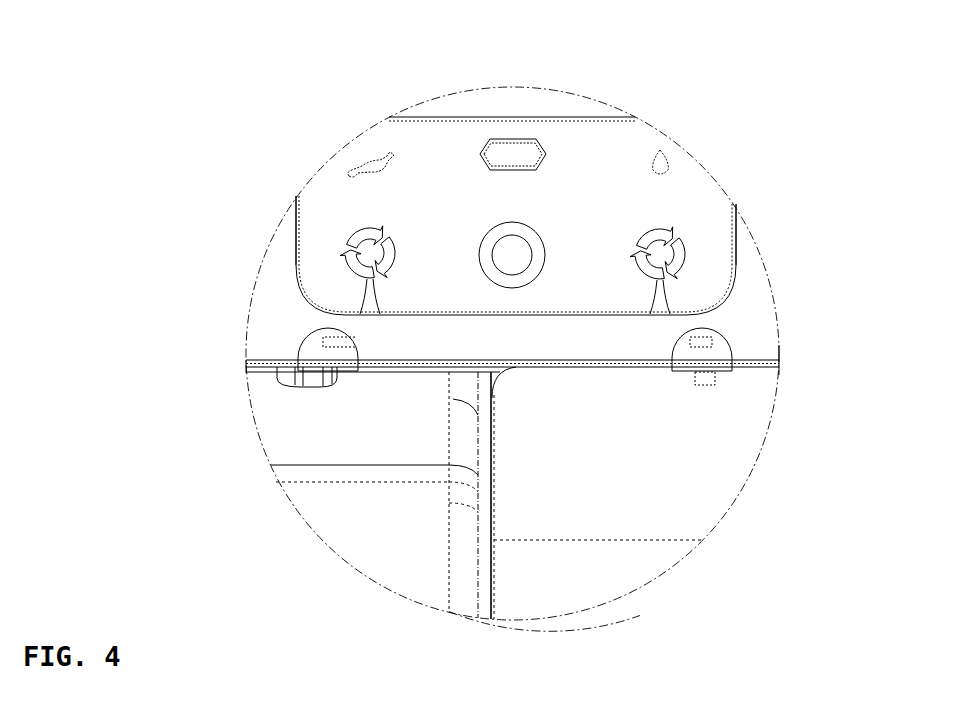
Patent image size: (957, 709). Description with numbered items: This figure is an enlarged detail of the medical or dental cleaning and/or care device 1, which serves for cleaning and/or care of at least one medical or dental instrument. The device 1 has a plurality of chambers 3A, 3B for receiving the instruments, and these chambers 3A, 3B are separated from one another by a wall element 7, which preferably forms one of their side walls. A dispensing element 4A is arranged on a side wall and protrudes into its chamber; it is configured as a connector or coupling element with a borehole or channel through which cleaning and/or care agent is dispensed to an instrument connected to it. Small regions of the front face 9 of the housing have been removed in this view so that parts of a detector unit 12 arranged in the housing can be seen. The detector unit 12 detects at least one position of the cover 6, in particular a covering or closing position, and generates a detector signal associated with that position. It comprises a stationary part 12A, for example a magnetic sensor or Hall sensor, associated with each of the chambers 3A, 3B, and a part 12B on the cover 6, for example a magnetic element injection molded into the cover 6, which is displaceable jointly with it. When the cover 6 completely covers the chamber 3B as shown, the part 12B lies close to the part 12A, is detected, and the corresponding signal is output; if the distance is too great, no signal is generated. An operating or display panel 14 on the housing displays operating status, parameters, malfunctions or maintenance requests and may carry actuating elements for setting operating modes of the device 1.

The medical or dental cleaning and/or care device 1 is at (724, 148).
The chamber 3A is at (365, 545).
The chamber 3B is at (566, 624).
The dispensing element 4A is at (316, 386).
The cover 6 is at (687, 520).
The wall element 7 is at (466, 603).
The front face 9 is at (275, 258).
The detector unit 12 is at (800, 361).
The stationary part 12A is at (335, 343).
The part on the cover 12B is at (705, 383).
The operating or display panel 14 is at (608, 138).